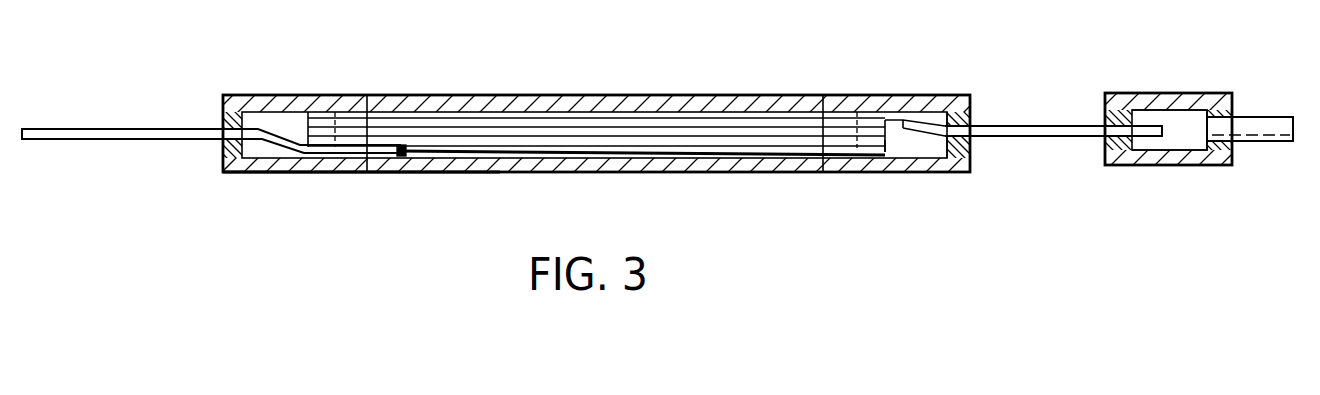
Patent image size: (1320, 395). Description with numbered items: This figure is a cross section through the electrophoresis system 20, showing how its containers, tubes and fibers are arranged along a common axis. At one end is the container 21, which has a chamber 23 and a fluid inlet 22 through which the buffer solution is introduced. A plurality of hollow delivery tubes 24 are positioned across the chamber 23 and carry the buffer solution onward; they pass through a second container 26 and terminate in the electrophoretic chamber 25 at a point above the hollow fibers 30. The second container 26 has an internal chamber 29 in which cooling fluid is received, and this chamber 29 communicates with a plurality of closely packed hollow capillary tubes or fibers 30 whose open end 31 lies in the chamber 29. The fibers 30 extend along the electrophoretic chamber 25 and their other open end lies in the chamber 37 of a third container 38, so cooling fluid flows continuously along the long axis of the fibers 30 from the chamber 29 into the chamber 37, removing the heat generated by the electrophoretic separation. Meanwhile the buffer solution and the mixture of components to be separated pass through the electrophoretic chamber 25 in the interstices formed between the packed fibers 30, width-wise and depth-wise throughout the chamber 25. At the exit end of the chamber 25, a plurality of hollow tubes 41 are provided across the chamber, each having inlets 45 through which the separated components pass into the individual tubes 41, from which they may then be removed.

The electrophoresis system 20 is at (463, 83).
The container 21 is at (1157, 102).
The fluid inlet 22 is at (1256, 118).
The chamber 23 is at (1182, 136).
The hollow delivery tubes 24 is at (1041, 136).
The electrophoretic chamber 25 is at (617, 99).
The second container 26 is at (949, 100).
The internal chamber 29 is at (900, 138).
The hollow capillary tubes or fibers 30 is at (730, 122).
The open end 31 is at (900, 145).
The chamber 37 is at (282, 123).
The third container 38 is at (284, 172).
The hollow tubes 41 is at (141, 127).
The inlets 45 is at (411, 158).